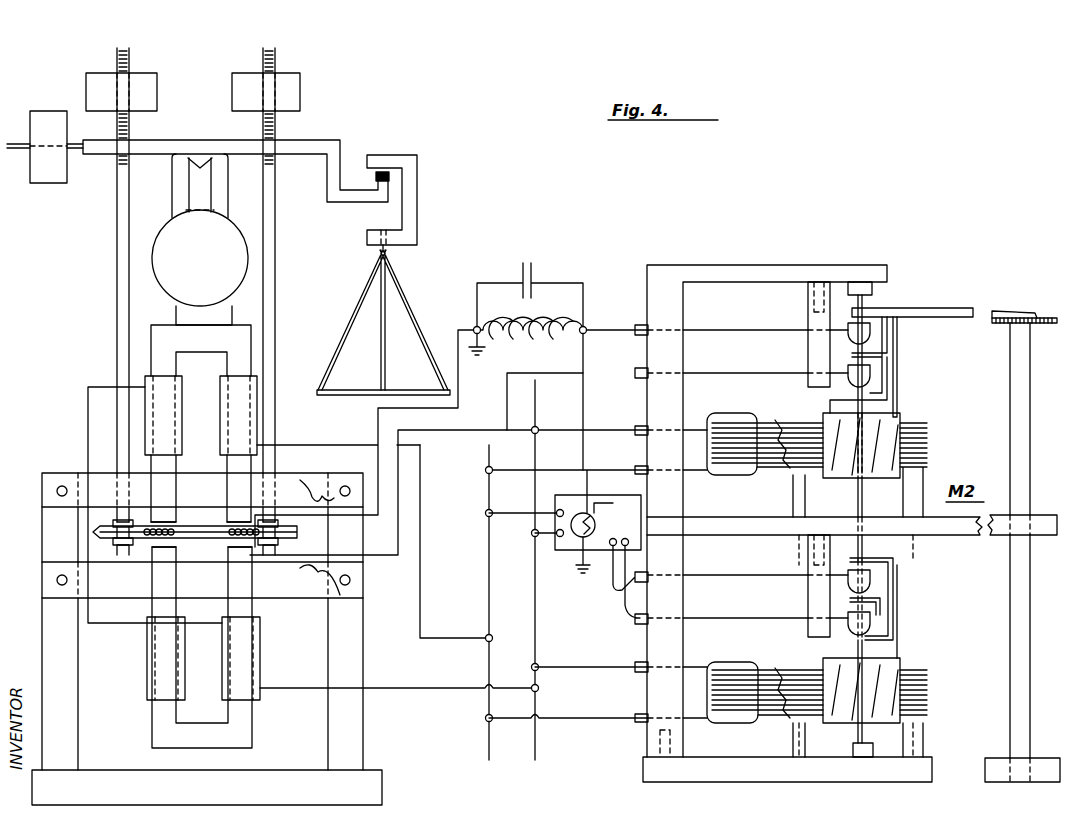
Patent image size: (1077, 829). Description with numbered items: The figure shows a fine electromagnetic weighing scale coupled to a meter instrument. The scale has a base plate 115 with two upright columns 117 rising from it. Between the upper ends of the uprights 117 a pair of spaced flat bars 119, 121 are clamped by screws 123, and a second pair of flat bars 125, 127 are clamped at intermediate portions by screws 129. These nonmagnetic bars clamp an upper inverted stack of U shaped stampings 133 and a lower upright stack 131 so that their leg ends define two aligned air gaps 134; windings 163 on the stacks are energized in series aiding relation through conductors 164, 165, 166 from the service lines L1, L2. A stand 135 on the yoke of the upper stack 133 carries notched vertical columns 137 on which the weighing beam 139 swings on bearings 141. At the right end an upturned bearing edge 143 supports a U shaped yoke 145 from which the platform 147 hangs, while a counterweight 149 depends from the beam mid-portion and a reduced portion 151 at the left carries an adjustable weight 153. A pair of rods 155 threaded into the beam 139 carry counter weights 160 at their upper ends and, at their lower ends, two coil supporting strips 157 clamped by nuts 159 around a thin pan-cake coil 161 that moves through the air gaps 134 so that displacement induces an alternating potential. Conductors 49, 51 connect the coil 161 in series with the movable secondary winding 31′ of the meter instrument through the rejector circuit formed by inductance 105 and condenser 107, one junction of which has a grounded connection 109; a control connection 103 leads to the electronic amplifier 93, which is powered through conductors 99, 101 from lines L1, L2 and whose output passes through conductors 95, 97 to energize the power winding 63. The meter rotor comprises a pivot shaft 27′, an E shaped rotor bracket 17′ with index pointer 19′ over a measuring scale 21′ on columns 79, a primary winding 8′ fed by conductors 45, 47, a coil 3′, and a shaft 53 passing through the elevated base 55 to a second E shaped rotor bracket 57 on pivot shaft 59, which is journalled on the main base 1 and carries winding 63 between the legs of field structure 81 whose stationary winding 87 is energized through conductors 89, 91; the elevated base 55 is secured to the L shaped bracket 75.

The main base 1 is at (743, 757).
The coil 3′ is at (928, 440).
The primary winding 8′ is at (727, 413).
The E shaped rotor bracket 17′ is at (898, 352).
The index pointer 19′ is at (935, 308).
The measuring scale 21′ is at (1048, 312).
The pivot shaft 27′ is at (868, 300).
The secondary meter winding 31′ is at (828, 420).
The conductor 45 is at (604, 432).
The conductor 47 is at (574, 470).
The conductor 49 is at (468, 430).
The conductor 51 is at (376, 428).
The shaft 53 is at (858, 500).
The elevated base 55 is at (748, 517).
The second E shaped rotor bracket 57 is at (898, 580).
The pivot shaft 59 is at (864, 740).
The winding 63 is at (892, 668).
The L shaped bracket 75 is at (665, 693).
The columns 79 is at (1030, 375).
The field structure 81 is at (928, 686).
The stationary winding 87 is at (745, 662).
The conductor 89 is at (556, 720).
The conductor 91 is at (554, 670).
The electronic amplifier 93 is at (630, 496).
The conductor 95 is at (614, 588).
The conductor 97 is at (622, 618).
The conductor 99 is at (538, 538).
The conductor 101 is at (496, 513).
The control energizing connection 103 is at (584, 386).
The inductance 105 is at (520, 322).
The condenser 107 is at (528, 262).
The grounded connection 109 is at (484, 348).
The base plate 115 is at (136, 770).
The upright columns 117 is at (330, 483).
The flat bar 119 is at (103, 473).
The flat bar 121 is at (316, 480).
The screws 123 is at (56, 491).
The flat bar 125 is at (270, 578).
The flat bar 127 is at (325, 598).
The screws 129 is at (353, 580).
The lower stack of stampings 131 is at (250, 730).
The upper stack of stampings 133 is at (158, 340).
The air gaps 134 is at (176, 524).
The stand 135 is at (220, 318).
The vertical columns 137 is at (213, 196).
The beam 139 is at (243, 140).
The bearings 141 is at (196, 163).
The upturned bearing edge 143 is at (372, 172).
The U shaped yoke 145 is at (417, 190).
The platform 147 is at (374, 390).
The counterweight 149 is at (168, 273).
The reduced portion 151 is at (74, 163).
The adjustable weight 153 is at (60, 185).
The rods 155 is at (117, 248).
The coil supporting strips 157 is at (93, 532).
The nuts 159 is at (113, 522).
The counter weights 160 is at (300, 93).
The pan-cake coil 161 is at (228, 536).
The windings 163 is at (206, 432).
The conductor 164 is at (422, 603).
The conductor 165 is at (88, 392).
The conductor 166 is at (440, 688).
The main service line L1 is at (486, 573).
The main service line L2 is at (534, 573).